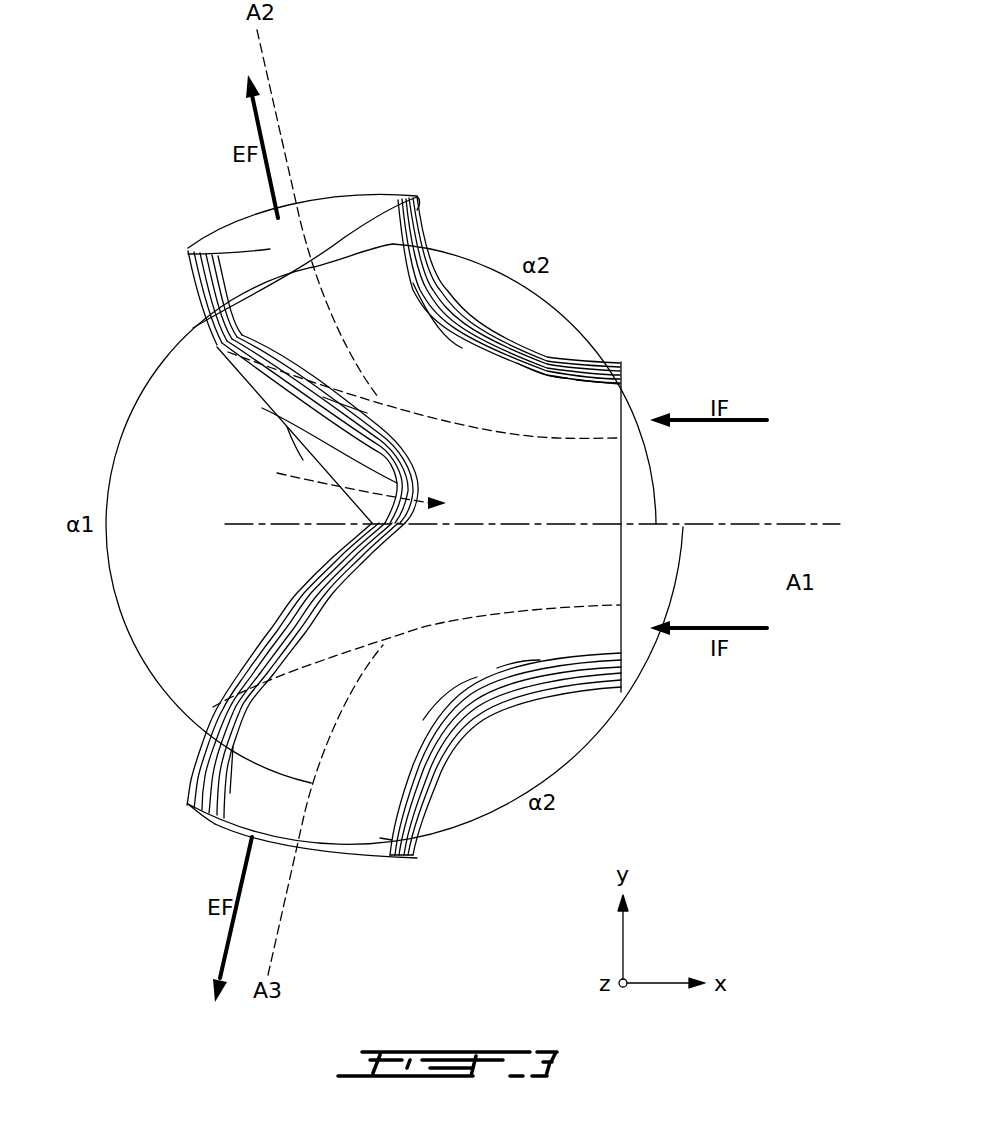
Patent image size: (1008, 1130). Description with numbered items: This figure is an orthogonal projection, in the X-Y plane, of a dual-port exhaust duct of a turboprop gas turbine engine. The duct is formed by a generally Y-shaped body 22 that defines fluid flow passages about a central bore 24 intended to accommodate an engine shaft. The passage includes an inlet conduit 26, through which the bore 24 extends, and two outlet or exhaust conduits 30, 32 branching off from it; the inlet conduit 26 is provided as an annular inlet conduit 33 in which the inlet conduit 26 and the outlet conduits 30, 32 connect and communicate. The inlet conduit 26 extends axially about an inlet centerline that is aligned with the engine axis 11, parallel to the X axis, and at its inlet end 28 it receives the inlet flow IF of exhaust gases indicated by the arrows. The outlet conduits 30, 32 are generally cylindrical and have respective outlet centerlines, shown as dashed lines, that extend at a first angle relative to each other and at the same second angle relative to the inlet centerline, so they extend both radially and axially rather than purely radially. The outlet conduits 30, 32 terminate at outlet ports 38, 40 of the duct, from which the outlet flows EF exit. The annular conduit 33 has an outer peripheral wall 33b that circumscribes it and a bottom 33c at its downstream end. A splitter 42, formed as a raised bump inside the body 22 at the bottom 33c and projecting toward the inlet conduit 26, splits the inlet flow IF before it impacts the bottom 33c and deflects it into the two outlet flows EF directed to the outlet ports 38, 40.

The engine axis 11 is at (822, 522).
The Y-shaped body 22 is at (300, 667).
The central bore 24 is at (348, 485).
The inlet conduit 26 is at (570, 697).
The inlet 28 is at (622, 560).
The outlet conduit 30 is at (392, 258).
The outlet conduit 32 is at (390, 810).
The annular inlet conduit 33 is at (492, 427).
The outer peripheral wall 33b is at (563, 627).
The bottom of the conduit 33c is at (297, 593).
The outlet port 38 is at (323, 212).
The outlet port 40 is at (323, 848).
The splitter 42 is at (262, 408).